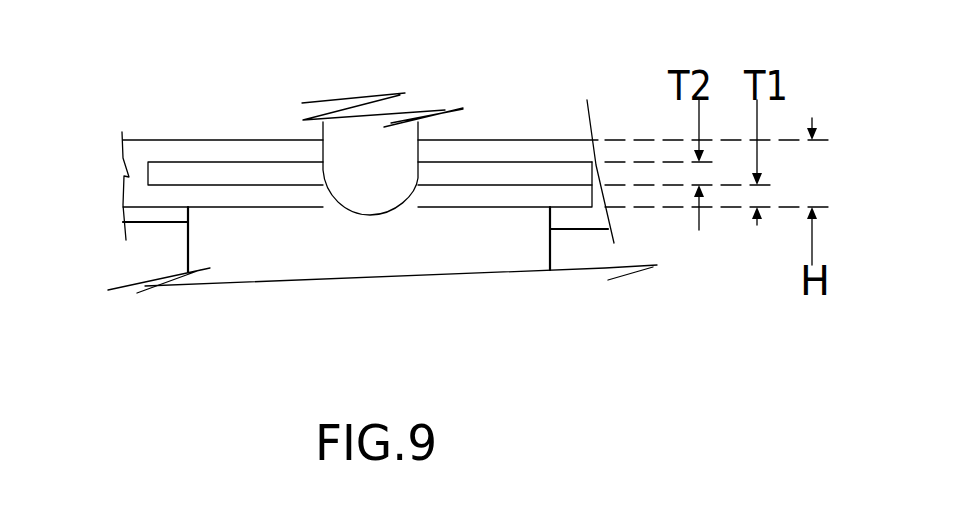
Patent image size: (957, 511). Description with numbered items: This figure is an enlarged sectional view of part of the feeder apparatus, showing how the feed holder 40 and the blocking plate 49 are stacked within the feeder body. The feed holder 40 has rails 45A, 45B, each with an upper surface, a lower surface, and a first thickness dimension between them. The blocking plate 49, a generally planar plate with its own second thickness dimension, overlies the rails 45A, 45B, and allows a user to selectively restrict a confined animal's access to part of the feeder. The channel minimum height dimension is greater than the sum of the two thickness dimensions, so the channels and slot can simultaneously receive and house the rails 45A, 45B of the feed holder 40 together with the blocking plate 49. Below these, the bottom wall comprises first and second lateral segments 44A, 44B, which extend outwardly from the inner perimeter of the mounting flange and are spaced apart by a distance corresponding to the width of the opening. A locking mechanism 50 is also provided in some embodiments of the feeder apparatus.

The feed holder 40 is at (342, 247).
The first lateral segment 44A is at (170, 214).
The second lateral segment 44B is at (557, 218).
The rail 45A is at (177, 195).
The rail 45B is at (578, 197).
The blocking plate 49 is at (206, 174).
The locking mechanism 50 is at (376, 191).